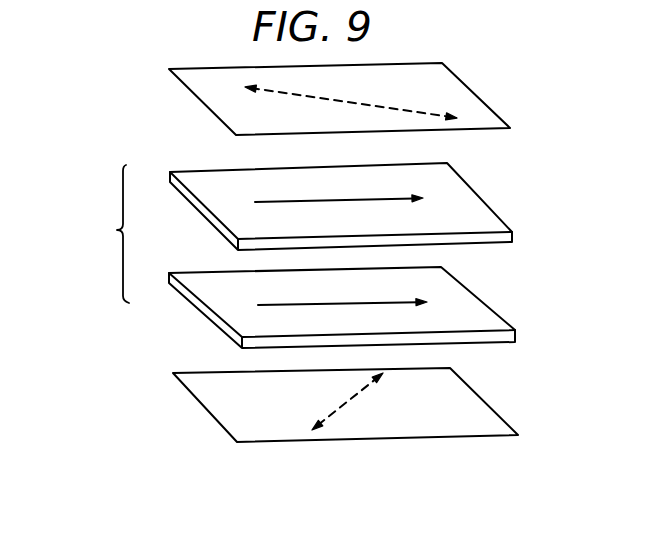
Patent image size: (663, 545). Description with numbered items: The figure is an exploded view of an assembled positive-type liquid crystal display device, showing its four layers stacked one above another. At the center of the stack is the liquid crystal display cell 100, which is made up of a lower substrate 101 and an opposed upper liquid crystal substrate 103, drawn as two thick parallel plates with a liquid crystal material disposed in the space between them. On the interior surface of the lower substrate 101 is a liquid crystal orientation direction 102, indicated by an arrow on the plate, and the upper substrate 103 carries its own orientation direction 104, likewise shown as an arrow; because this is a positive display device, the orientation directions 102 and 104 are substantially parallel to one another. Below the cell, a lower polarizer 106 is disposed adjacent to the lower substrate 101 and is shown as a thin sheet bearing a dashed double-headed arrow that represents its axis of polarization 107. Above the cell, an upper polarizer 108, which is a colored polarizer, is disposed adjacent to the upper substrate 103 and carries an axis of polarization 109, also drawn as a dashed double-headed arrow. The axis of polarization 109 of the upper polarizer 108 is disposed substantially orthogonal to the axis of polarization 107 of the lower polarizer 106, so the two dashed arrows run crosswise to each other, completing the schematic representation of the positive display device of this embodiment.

The liquid crystal display cell 100 is at (115, 230).
The lower substrate 101 is at (493, 318).
The liquid crystal orientation direction 102 is at (387, 300).
The upper liquid crystal substrate 103 is at (482, 208).
The orientation direction 104 is at (377, 193).
The lower polarizer 106 is at (483, 413).
The axis of polarization 107 is at (355, 396).
The upper polarizer 108 is at (470, 98).
The axis of polarization 109 is at (377, 105).